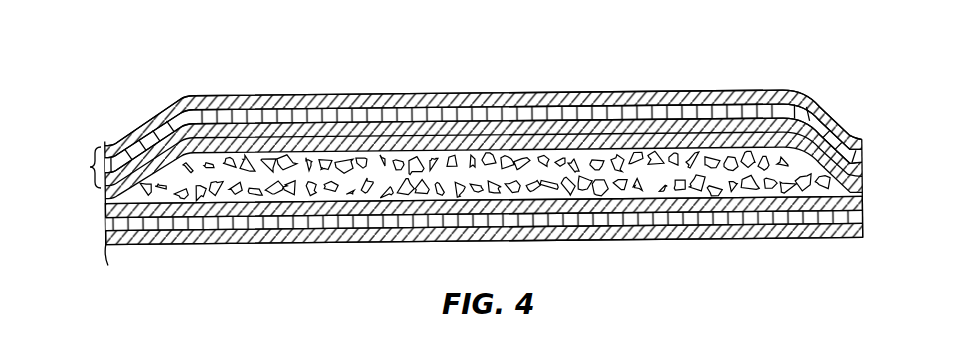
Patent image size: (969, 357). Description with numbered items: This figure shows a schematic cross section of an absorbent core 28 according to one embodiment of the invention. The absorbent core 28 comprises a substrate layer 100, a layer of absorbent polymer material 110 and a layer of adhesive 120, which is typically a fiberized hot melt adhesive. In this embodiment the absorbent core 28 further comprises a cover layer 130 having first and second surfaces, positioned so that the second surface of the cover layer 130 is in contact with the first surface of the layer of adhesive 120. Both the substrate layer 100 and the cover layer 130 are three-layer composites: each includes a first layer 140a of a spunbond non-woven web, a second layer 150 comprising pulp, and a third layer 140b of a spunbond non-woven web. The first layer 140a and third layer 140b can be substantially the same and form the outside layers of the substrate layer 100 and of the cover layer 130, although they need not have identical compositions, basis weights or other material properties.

The absorbent core 28 is at (788, 66).
The substrate layer 100 is at (101, 203).
The layer of absorbent polymer material 110 is at (473, 121).
The layer of adhesive 120 is at (863, 185).
The cover layer 130 is at (78, 167).
The first layer 140a is at (862, 126).
The third layer 140b is at (861, 163).
The second layer 150 is at (861, 150).